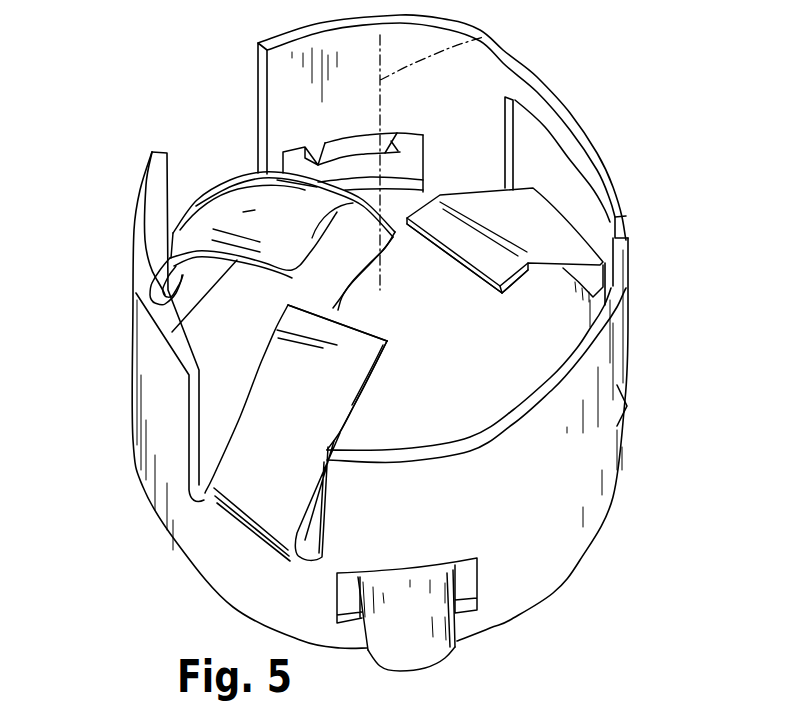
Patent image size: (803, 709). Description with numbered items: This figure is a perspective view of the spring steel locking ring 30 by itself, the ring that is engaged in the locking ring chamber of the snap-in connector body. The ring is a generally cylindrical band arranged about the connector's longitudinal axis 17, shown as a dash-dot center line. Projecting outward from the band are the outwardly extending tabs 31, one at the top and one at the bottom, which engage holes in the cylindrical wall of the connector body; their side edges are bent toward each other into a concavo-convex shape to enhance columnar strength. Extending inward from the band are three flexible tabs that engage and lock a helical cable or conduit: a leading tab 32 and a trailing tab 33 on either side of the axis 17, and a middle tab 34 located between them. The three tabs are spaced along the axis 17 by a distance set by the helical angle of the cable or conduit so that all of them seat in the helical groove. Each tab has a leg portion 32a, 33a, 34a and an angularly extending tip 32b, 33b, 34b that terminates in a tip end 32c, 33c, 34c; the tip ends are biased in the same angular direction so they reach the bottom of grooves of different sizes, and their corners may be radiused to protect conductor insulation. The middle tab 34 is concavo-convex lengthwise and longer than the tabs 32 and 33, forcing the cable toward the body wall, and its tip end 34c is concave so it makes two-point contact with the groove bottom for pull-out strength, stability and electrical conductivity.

The longitudinal axis 17 is at (483, 36).
The spring steel locking ring 30 is at (553, 590).
The outwardly extending tabs 31 is at (350, 148).
The leading tab 32 is at (556, 248).
The leg portion 32a is at (567, 272).
The angularly extending tip 32b is at (523, 278).
The tip end 32c is at (453, 260).
The trailing tab 33 is at (296, 437).
The leg portion 33a is at (367, 408).
The angularly extending tip 33b is at (345, 352).
The tip end 33c is at (353, 330).
The middle tab 34 is at (243, 221).
The leg portion 34a is at (158, 304).
The angularly extending tip 34b is at (300, 262).
The tip end 34c is at (353, 262).